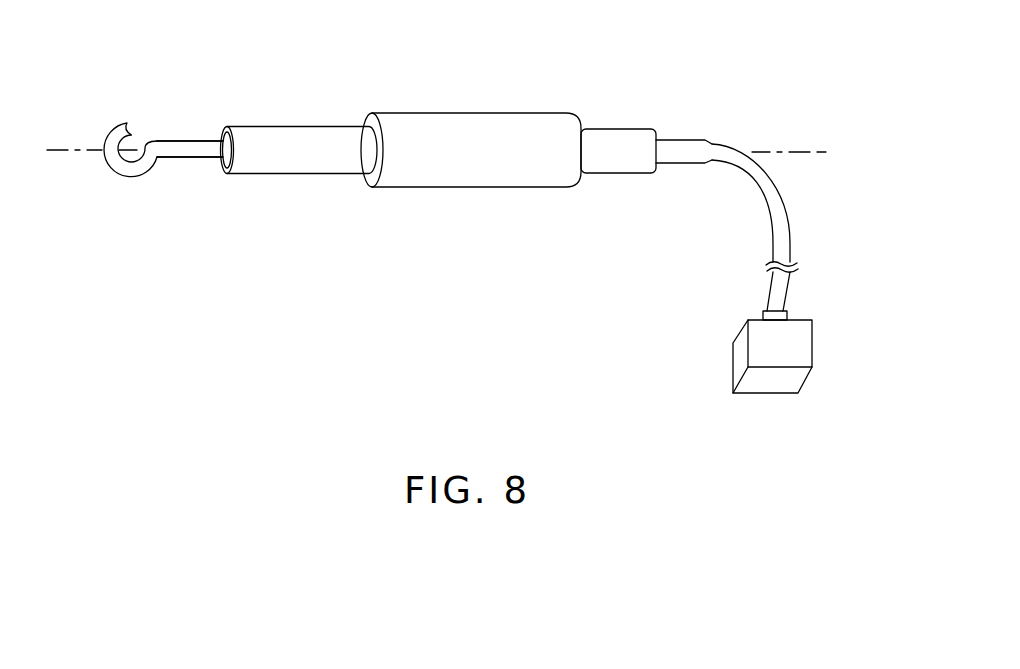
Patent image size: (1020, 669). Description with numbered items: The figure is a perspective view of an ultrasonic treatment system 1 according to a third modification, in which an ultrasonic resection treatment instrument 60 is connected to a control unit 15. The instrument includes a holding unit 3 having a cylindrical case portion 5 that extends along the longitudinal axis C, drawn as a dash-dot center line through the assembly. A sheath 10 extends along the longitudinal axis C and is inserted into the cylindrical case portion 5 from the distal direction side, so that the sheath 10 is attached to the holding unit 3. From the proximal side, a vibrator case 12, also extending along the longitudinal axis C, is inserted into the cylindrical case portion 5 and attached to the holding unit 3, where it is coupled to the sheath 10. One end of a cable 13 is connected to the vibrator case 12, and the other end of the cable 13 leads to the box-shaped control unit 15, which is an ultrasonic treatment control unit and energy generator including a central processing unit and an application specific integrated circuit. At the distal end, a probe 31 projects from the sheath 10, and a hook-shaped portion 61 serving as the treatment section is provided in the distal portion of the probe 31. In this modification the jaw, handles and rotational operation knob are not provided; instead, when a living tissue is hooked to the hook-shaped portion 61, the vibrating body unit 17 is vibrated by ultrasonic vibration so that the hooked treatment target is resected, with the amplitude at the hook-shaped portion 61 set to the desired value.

The ultrasonic treatment system 1 is at (654, 68).
The holding unit 3 is at (421, 139).
The cylindrical case portion 5 is at (447, 176).
The sheath 10 is at (283, 138).
The vibrator case 12 is at (612, 140).
The cable 13 is at (777, 196).
The control unit 15 is at (770, 383).
The vibrating body unit 17 is at (207, 151).
The probe 31 is at (167, 157).
The ultrasonic resection treatment instrument 60 is at (510, 110).
The hook-shaped portion 61 is at (124, 127).
The longitudinal axis C is at (812, 150).